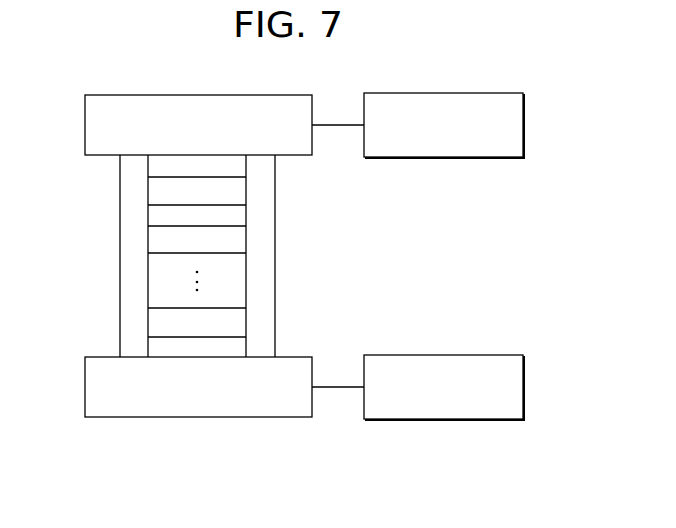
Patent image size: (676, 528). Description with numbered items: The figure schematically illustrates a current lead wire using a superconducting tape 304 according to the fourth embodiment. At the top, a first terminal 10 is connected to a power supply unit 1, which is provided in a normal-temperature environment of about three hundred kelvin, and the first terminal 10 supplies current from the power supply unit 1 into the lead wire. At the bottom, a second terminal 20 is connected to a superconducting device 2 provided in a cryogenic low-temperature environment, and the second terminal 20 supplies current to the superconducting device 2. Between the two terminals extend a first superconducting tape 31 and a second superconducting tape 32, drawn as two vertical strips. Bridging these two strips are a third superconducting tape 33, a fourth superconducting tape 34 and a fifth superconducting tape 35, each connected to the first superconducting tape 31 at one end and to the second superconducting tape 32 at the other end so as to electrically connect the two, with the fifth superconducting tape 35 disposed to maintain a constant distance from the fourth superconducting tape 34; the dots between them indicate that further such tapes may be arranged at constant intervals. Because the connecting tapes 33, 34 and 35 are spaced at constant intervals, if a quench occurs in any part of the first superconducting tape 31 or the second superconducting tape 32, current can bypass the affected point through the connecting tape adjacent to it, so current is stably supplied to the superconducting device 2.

The power supply unit 1 is at (522, 93).
The superconducting device 2 is at (522, 355).
The first terminal 10 is at (85, 95).
The second terminal 20 is at (85, 357).
The first superconducting tape 31 is at (125, 187).
The second superconducting tape 32 is at (270, 172).
The third superconducting tape 33 is at (237, 188).
The fourth superconducting tape 34 is at (238, 242).
The fifth superconducting tape 35 is at (237, 321).
The current lead wire using a superconducting tape 304 is at (170, 256).